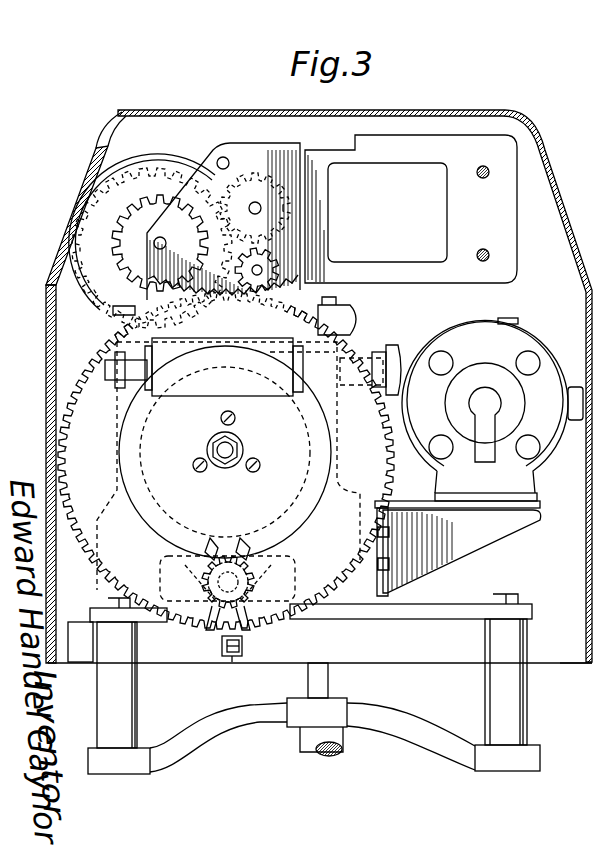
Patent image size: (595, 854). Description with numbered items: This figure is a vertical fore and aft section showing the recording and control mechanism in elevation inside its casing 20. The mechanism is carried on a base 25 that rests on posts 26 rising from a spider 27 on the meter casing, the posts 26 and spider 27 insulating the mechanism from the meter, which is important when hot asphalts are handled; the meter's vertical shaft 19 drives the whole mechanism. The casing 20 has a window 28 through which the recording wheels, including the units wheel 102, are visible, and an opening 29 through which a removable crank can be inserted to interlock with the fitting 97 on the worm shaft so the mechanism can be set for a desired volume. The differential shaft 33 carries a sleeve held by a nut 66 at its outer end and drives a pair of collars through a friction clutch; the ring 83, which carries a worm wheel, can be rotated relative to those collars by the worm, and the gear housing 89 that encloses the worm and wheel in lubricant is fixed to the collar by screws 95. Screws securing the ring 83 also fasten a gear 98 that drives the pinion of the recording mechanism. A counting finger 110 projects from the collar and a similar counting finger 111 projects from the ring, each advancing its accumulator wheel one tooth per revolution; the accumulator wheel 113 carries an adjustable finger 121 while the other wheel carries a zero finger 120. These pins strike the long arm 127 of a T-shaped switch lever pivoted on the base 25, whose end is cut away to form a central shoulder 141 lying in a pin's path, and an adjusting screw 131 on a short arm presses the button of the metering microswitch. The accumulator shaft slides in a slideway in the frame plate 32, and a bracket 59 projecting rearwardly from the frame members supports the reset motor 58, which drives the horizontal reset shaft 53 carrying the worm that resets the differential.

The casing 20 is at (546, 152).
The window 28 is at (80, 187).
The opening 29 is at (46, 380).
The units wheel 102 is at (170, 160).
The frame plate 32 is at (107, 579).
The gear housing 89 is at (225, 452).
The ring 83 is at (300, 513).
The gear 98 is at (206, 563).
The fitting 97 is at (112, 372).
The nut 66 is at (208, 448).
The differential shaft 33 is at (223, 455).
The screws 95 is at (259, 467).
The counting finger 111 is at (252, 530).
The counting finger 110 is at (214, 538).
The accumulator wheel 113 is at (240, 606).
The adjustable finger 121 is at (256, 633).
The zero finger 120 is at (211, 651).
The central shoulder 141 is at (241, 645).
The long arm 127 is at (230, 660).
The reset shaft 53 is at (363, 347).
The reset motor 58 is at (466, 328).
The bracket 59 is at (490, 537).
The base 25 is at (150, 621).
The posts 26 is at (115, 696).
The spider 27 is at (208, 720).
The vertical shaft 19 is at (329, 681).
The adjusting screw 131 is at (577, 680).